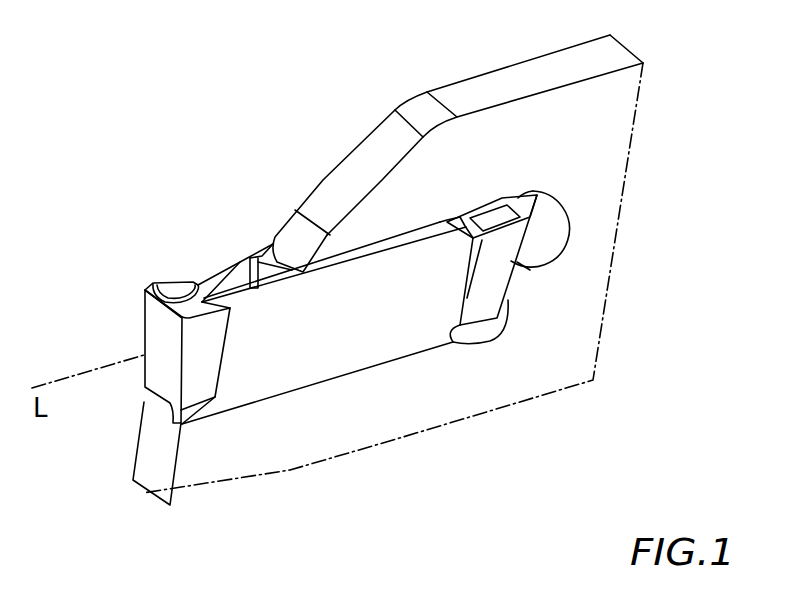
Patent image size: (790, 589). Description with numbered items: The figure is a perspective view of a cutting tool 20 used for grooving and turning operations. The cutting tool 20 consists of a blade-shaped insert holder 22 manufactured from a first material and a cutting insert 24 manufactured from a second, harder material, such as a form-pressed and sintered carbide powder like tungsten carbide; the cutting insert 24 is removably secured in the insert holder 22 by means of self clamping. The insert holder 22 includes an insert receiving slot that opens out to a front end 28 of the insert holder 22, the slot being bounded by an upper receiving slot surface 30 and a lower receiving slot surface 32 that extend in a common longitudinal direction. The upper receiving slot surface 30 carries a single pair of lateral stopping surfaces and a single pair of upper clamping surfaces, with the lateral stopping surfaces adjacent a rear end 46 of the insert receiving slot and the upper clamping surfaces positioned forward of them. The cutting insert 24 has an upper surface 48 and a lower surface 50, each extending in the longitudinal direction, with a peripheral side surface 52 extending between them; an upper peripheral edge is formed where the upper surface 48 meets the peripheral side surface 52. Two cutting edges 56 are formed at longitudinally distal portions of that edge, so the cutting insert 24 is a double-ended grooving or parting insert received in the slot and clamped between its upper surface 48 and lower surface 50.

The cutting tool 20 is at (138, 190).
The insert holder 22 is at (553, 363).
The cutting insert 24 is at (362, 370).
The front end 28 is at (148, 462).
The upper receiving slot surface 30 is at (365, 274).
The lower receiving slot surface 32 is at (270, 380).
The rear end 46 is at (492, 288).
The upper surface 48 is at (240, 262).
The lower surface 50 is at (243, 425).
The peripheral side surface 52 is at (400, 325).
The cutting edges 56 is at (143, 296).